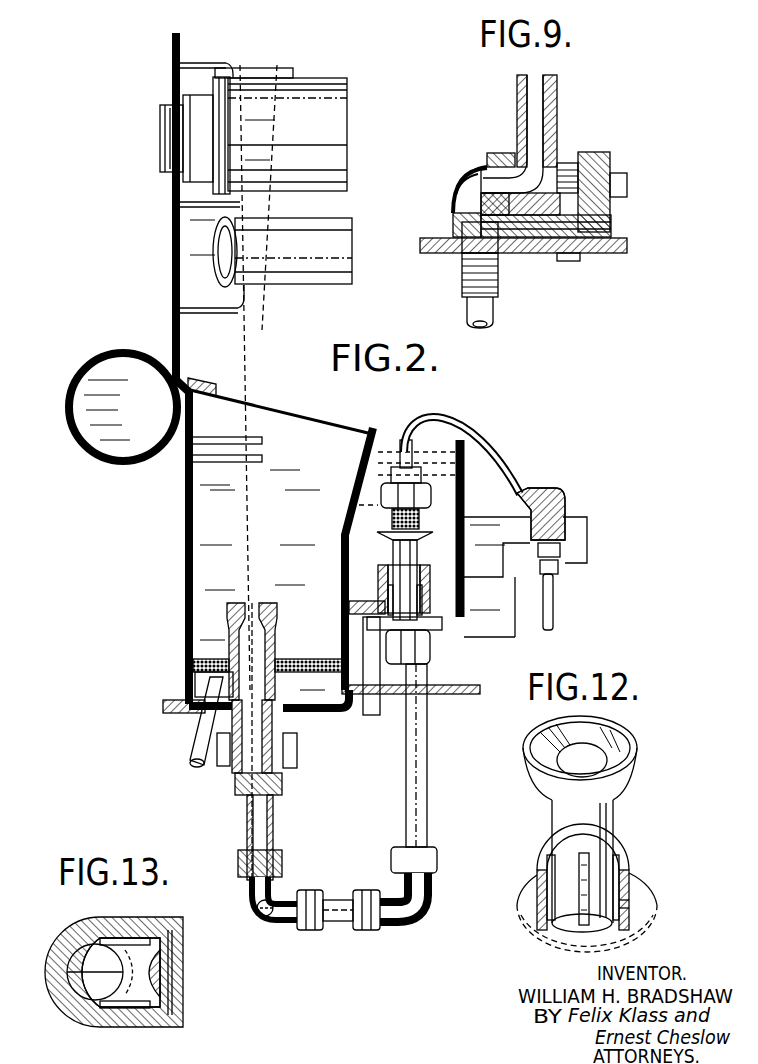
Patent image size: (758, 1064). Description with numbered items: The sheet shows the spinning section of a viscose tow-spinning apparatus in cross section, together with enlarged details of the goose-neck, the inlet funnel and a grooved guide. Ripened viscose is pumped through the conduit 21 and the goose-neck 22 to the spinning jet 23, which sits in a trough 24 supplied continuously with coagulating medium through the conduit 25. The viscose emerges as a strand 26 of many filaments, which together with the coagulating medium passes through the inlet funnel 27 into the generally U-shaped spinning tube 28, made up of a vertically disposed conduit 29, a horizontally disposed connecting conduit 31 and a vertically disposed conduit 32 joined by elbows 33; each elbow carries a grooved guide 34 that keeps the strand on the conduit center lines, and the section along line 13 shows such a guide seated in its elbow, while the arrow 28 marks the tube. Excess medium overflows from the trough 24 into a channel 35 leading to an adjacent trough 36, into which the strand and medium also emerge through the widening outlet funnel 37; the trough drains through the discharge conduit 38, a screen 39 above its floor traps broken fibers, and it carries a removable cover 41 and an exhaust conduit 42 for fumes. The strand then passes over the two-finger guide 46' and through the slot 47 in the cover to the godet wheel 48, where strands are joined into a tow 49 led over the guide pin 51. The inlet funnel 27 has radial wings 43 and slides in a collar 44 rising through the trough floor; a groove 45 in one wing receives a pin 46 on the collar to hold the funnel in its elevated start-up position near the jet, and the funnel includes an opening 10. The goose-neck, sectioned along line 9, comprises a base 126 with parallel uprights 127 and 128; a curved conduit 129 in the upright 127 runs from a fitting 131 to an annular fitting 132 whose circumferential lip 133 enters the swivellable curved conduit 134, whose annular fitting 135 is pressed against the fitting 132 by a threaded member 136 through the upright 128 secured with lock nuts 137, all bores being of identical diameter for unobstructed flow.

In FIG. 2, the section line 9- 9 is at (549, 462).
In FIG. 2, the spray nozzle 10 is at (404, 449).
In FIG. 2, the elbow conduit 13 is at (282, 893).
In FIG. 2, the conduit 21 is at (553, 625).
In FIG. 9, the conduit 21 is at (493, 314).
In FIG. 2, the goose-neck 22 is at (573, 502).
In FIG. 9, the goose-neck 22 is at (448, 198).
In FIG. 2, the spinning jet 23 is at (432, 482).
In FIG. 2, the trough 24 is at (466, 458).
In FIG. 2, the conduit 25 is at (371, 716).
In FIG. 2, the strand 26 is at (252, 509).
In FIG. 2, the inlet funnel 27 is at (418, 551).
In FIG. 12, the inlet funnel 27 is at (626, 817).
In FIG. 2, the spinning tube 28 is at (347, 938).
In FIG. 2, the vertically disposed conduit 29 is at (428, 782).
In FIG. 2, the horizontally disposed connecting conduit 31 is at (346, 898).
In FIG. 2, the vertically disposed conduit 32 is at (246, 822).
In FIG. 2, the elbow 33 is at (281, 930).
In FIG. 13, the elbow 33 is at (62, 1000).
In FIG. 2, the grooved guide 34 is at (256, 908).
In FIG. 13, the grooved guide 34 is at (143, 1012).
In FIG. 2, the channel 35 is at (350, 505).
In FIG. 2, the trough 36 is at (185, 557).
In FIG. 2, the outlet funnel 37 is at (280, 628).
In FIG. 2, the discharge conduit 38 is at (192, 754).
In FIG. 2, the screen 39 is at (319, 660).
In FIG. 2, the removable cover 41 is at (303, 416).
In FIG. 2, the exhaust conduit 42 is at (68, 407).
In FIG. 2, the wing 43 is at (393, 578).
In FIG. 12, the wing 43 is at (540, 855).
In FIG. 2, the collar 44 is at (431, 578).
In FIG. 12, the collar 44 is at (545, 840).
In FIG. 2, the groove 45 is at (420, 620).
In FIG. 12, the groove 45 is at (620, 903).
In FIG. 2, the pin 46 is at (445, 597).
In FIG. 12, the pin 46 is at (634, 889).
In FIG. 2, the two-finger guide 46' is at (245, 449).
In FIG. 2, the slot 47 is at (218, 382).
In FIG. 2, the godet wheel 48 is at (362, 165).
In FIG. 2, the tow 49 is at (270, 206).
In FIG. 2, the guide pin 51 is at (258, 78).
In FIG. 9, the base 126 is at (547, 256).
In FIG. 9, the upright 127 is at (496, 153).
In FIG. 9, the upright 128 is at (596, 152).
In FIG. 9, the curved conduit 129 is at (468, 210).
In FIG. 9, the fitting 131 is at (470, 247).
In FIG. 9, the annular fitting 132 is at (486, 170).
In FIG. 9, the circumferential lip 133 is at (478, 181).
In FIG. 2, the curved conduit 134 is at (478, 432).
In FIG. 9, the curved conduit 134 is at (557, 103).
In FIG. 9, the annular fitting 135 is at (515, 254).
In FIG. 9, the threaded member 136 is at (627, 181).
In FIG. 9, the lock nut 137 is at (568, 163).